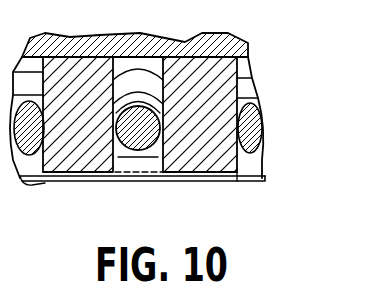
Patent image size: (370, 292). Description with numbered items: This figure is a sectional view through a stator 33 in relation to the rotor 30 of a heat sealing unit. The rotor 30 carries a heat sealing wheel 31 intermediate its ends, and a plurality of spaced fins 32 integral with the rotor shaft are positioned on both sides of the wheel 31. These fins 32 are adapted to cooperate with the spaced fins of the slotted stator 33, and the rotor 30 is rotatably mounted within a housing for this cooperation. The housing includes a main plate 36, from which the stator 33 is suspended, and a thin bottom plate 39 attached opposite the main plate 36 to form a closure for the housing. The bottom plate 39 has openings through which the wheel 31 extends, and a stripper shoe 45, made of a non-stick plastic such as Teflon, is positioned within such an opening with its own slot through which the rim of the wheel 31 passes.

The rotor 30 is at (131, 58).
The main plate 36 is at (142, 45).
The stripper shoe 45 is at (61, 184).
The heat sealing wheel 31 is at (137, 184).
The fin 32 is at (166, 183).
The stator 33 is at (72, 178).
The bottom plate 39 is at (214, 182).